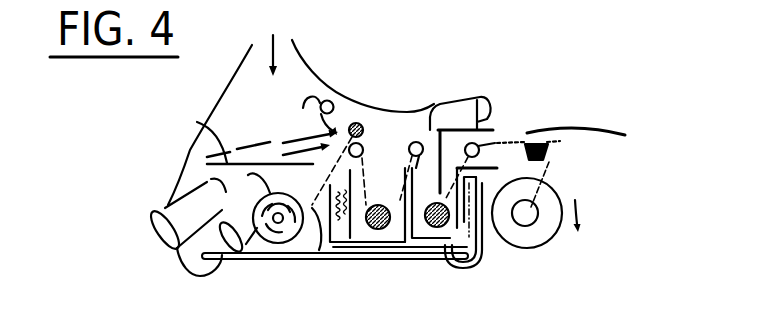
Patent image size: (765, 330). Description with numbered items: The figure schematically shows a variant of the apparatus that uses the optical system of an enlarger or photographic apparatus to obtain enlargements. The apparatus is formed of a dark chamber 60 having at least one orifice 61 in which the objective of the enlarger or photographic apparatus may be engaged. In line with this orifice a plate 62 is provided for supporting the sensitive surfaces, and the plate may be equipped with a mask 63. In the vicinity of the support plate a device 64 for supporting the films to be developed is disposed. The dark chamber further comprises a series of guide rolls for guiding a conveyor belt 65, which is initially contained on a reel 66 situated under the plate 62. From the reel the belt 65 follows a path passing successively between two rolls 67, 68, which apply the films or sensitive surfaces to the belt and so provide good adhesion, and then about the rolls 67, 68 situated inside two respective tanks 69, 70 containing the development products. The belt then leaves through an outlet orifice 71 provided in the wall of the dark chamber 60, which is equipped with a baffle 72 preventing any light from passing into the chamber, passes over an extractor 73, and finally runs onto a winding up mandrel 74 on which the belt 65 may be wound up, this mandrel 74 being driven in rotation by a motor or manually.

The dark chamber 60 is at (170, 172).
The orifice 61 is at (292, 40).
The plate 62 is at (198, 123).
The mask 63 is at (273, 122).
The device for supporting the films 64 is at (332, 102).
The conveyor belt 65 is at (319, 250).
The reel 66 is at (272, 243).
The roll 67 is at (360, 124).
The roll 68 is at (363, 150).
The tank 69 is at (362, 228).
The tank 70 is at (458, 265).
The outlet orifice 71 is at (498, 132).
The baffle 72 is at (434, 103).
The extractor 73 is at (547, 150).
The winding up mandrel 74 is at (532, 226).